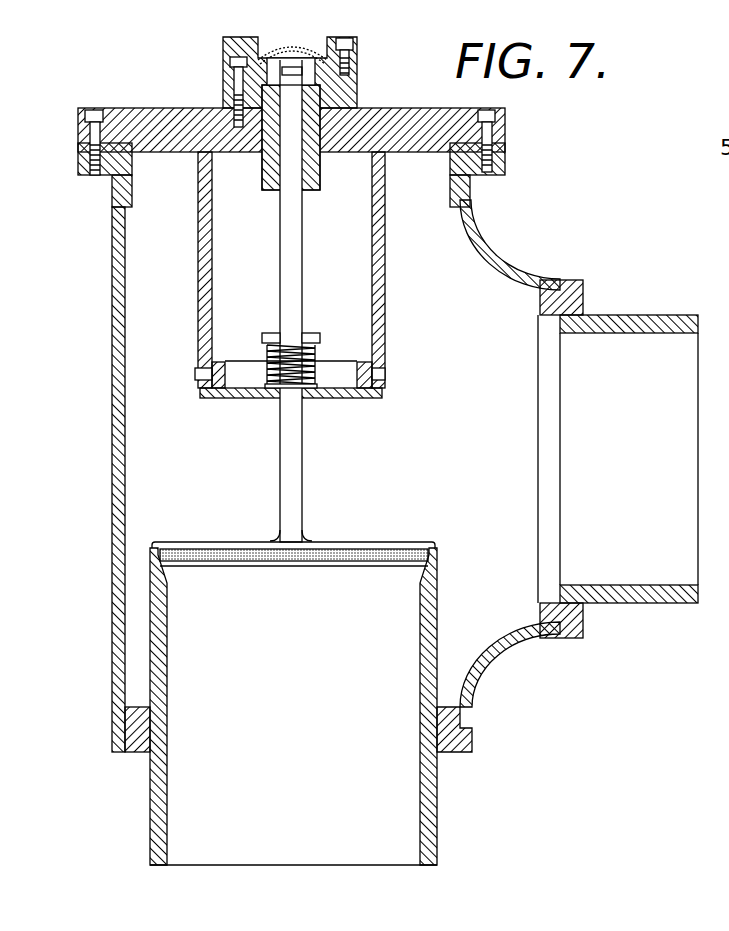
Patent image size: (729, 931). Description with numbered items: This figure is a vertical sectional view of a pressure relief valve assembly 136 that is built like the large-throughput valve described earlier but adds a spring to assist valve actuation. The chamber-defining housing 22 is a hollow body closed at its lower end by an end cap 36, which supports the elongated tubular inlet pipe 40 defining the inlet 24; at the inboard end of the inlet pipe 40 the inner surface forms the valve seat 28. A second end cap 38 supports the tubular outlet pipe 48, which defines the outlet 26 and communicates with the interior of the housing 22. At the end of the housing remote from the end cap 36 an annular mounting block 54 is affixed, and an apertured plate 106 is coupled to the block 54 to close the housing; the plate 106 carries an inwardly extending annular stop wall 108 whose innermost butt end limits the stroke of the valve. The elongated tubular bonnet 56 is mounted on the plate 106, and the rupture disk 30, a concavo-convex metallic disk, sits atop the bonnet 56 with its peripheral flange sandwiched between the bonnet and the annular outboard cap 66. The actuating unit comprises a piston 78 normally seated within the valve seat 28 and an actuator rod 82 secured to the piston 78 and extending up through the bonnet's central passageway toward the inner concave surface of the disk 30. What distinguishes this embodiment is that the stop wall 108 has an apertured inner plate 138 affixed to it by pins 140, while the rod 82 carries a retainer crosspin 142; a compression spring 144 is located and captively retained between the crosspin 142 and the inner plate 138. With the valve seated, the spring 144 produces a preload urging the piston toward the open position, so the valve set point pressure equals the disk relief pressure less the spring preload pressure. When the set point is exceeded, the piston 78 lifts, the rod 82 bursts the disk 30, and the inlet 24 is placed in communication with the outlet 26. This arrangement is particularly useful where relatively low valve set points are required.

The housing 22 is at (545, 258).
The inlet 24 is at (447, 811).
The outlet 26 is at (668, 308).
The valve seat 28 is at (445, 550).
The rupture disk 30 is at (272, 40).
The end cap 36 is at (464, 742).
The end cap 38 is at (584, 628).
The inlet pipe 40 is at (155, 808).
The outlet pipe 48 is at (661, 598).
The mounting block 54 is at (497, 155).
The bonnet 56 is at (349, 97).
The outboard cap 66 is at (323, 44).
The piston 78 is at (223, 547).
The actuator rod 82 is at (292, 246).
The apertured plate 106 is at (166, 114).
The stop wall 108 is at (380, 282).
The valve assembly 136 is at (556, 200).
The inner plate 138 is at (350, 396).
The pins 140 is at (385, 376).
The retainer crosspin 142 is at (267, 340).
The compression spring 144 is at (266, 376).